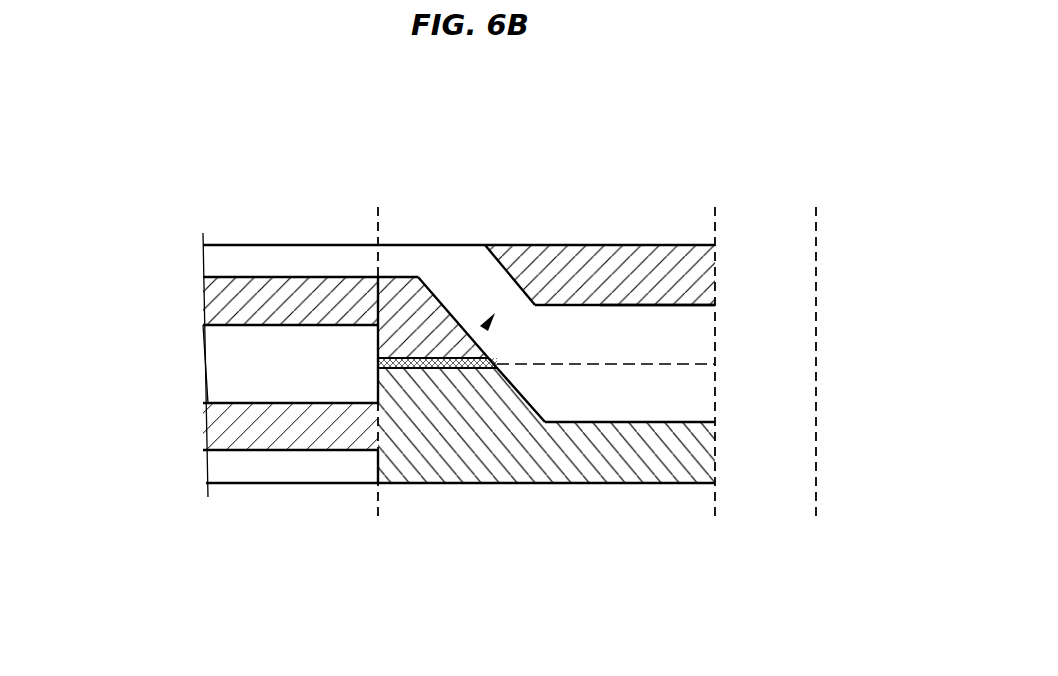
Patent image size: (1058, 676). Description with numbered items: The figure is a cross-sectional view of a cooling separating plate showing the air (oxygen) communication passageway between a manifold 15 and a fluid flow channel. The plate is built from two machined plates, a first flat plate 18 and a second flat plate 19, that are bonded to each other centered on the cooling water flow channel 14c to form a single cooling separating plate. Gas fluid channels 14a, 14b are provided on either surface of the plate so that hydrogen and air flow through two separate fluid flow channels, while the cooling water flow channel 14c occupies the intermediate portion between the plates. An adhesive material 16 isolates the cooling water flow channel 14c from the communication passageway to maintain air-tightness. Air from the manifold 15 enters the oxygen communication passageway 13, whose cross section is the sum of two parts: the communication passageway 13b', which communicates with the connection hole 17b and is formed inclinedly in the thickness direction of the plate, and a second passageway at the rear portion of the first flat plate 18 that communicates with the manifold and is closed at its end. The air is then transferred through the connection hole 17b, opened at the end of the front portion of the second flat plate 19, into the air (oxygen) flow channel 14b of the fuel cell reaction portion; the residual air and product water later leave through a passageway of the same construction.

The air (oxygen) flow channel 14b is at (263, 245).
The connection hole 17b is at (393, 245).
The second flat plate 19 is at (556, 245).
The adhesive material 16 is at (423, 358).
The communication passageway 13b' is at (657, 264).
The cooling water flow channel 14c is at (207, 368).
The gas fluid channel (hydrogen flow channel) 14a is at (283, 483).
The oxygen communication passageway 13 is at (480, 333).
The first flat plate 18 is at (552, 483).
The manifold (air/oxygen manifold) 15 is at (815, 445).